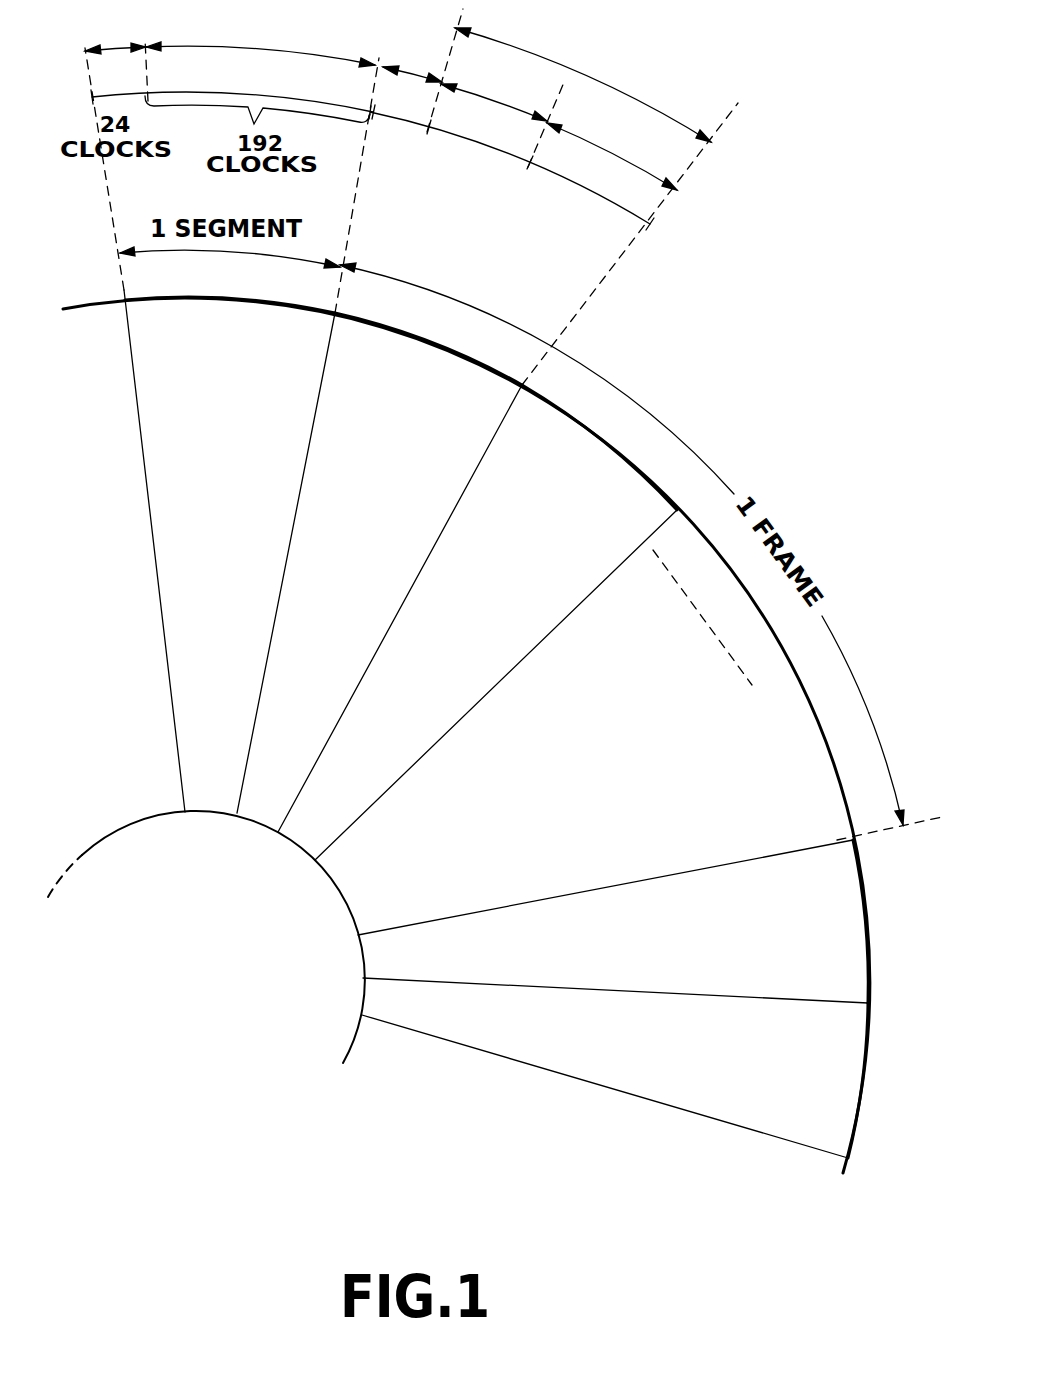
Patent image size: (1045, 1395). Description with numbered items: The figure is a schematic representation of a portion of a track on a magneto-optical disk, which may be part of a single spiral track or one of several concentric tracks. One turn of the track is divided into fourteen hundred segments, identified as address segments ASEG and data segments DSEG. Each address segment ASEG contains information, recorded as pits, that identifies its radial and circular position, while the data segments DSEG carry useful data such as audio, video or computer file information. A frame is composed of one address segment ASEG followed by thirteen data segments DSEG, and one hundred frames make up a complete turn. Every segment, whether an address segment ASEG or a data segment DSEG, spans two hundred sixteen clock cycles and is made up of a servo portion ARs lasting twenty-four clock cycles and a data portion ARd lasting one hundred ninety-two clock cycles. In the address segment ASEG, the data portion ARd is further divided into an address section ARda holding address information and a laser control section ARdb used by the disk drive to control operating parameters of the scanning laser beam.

The servo portion ARs is at (263, 56).
The data portion ARd is at (428, 79).
The address section ARda is at (494, 90).
The laser control section ARdb is at (612, 148).
The data segment DSEG is at (496, 727).
The address segment ASEG is at (601, 658).